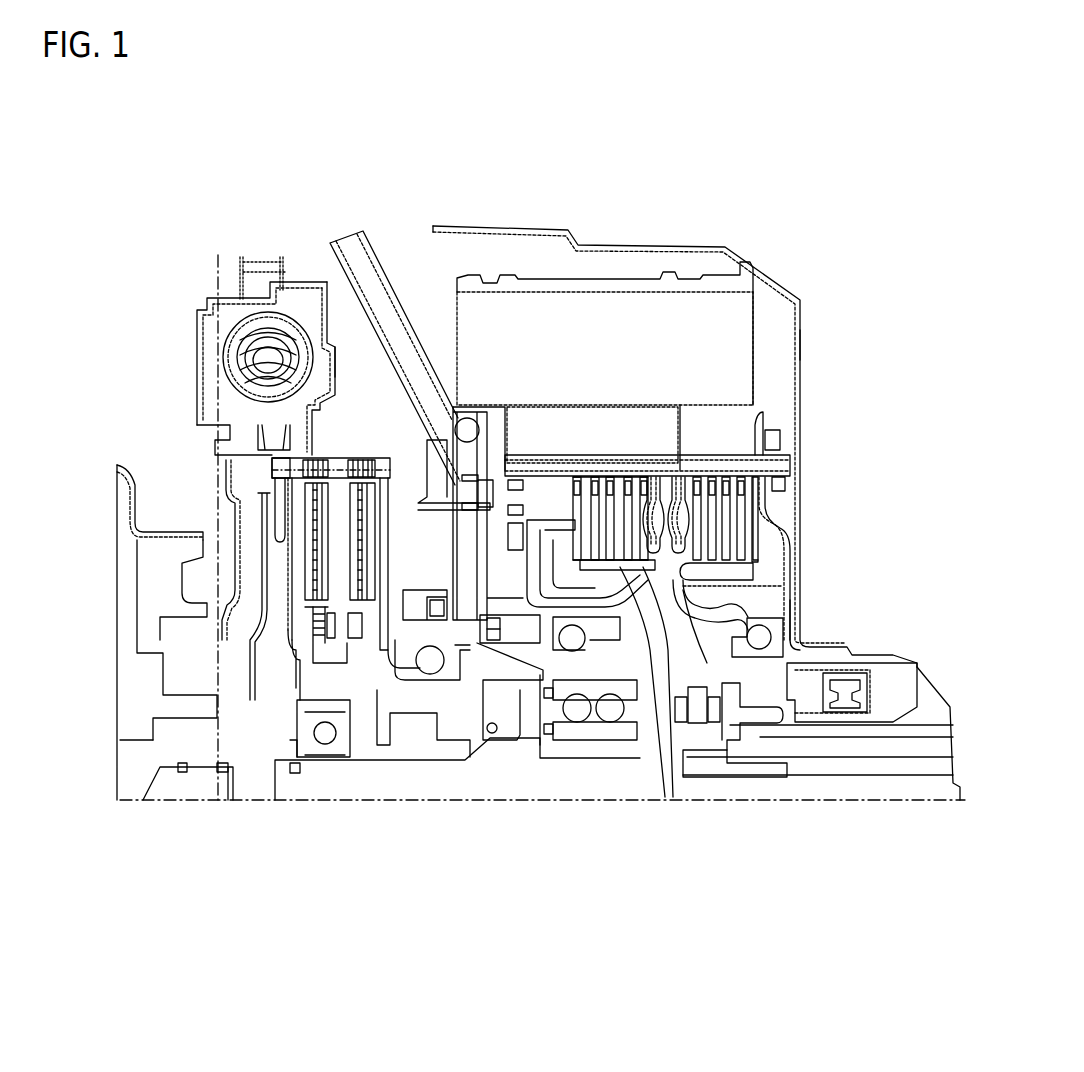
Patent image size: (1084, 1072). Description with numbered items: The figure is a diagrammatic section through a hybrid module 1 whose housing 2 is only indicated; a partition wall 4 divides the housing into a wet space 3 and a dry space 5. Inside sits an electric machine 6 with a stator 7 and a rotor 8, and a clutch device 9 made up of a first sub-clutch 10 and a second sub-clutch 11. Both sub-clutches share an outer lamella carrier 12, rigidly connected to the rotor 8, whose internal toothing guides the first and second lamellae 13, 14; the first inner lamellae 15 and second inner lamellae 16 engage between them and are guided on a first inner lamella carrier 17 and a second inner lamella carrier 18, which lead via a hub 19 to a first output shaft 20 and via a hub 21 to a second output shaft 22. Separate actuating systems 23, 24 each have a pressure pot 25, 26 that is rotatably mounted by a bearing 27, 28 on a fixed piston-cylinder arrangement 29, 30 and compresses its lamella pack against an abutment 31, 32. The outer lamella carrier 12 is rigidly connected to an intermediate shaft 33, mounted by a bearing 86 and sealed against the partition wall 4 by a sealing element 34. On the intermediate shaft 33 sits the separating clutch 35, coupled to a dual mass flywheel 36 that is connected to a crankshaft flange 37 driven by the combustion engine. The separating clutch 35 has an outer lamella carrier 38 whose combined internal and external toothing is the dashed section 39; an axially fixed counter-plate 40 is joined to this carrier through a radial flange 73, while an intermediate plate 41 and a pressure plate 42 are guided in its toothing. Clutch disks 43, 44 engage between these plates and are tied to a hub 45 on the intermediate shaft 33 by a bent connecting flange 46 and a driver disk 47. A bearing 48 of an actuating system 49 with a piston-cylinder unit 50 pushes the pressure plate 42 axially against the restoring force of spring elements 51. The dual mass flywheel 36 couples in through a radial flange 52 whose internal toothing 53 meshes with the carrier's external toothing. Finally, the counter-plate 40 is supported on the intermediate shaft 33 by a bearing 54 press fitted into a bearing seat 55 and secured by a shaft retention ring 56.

The hybrid module 1 is at (610, 186).
The housing 2 is at (806, 302).
The wet space 3 is at (778, 344).
The partition wall 4 is at (386, 275).
The dry space 5 is at (346, 326).
The electric machine 6 is at (764, 310).
The stator 7 is at (737, 306).
The rotor 8 is at (527, 415).
The clutch device 9 is at (783, 497).
The first sub-clutch 10 is at (588, 457).
The second sub-clutch 11 is at (720, 455).
The outer lamella carrier 12 is at (783, 466).
The first lamellae 13 is at (613, 480).
The second lamellae 14 is at (720, 486).
The first inner lamellae 15 is at (607, 548).
The second inner lamellae 16 is at (738, 552).
The first inner lamella carrier 17 is at (660, 688).
The second inner lamella carrier 18 is at (750, 580).
The hub 19 is at (708, 752).
The first output shaft 20 is at (804, 777).
The hub 21 is at (755, 720).
The second output shaft 22 is at (916, 733).
The actuating system 23 is at (528, 660).
The actuating system 24 is at (840, 658).
The pressure pot 25 is at (532, 565).
The pressure pot 26 is at (787, 572).
The bearing 27 is at (585, 650).
The bearing 28 is at (775, 638).
The piston-cylinder arrangement 29 is at (493, 642).
The piston-cylinder arrangement 30 is at (882, 688).
The abutment 31 is at (652, 480).
The abutment 32 is at (675, 483).
The intermediate shaft 33 is at (552, 787).
The sealing element 34 is at (490, 640).
The separating clutch 35 is at (352, 438).
The dual mass flywheel 36 is at (230, 240).
The crankshaft flange 37 is at (130, 770).
The outer lamella carrier 38 is at (320, 460).
The section 39 is at (380, 478).
The counter-plate 40 is at (293, 563).
The intermediate plate 41 is at (342, 463).
The pressure plate 42 is at (388, 577).
The clutch disk 43 is at (307, 592).
The clutch disk 44 is at (360, 548).
The hub 45 is at (382, 745).
The connecting flange 46 is at (333, 667).
The driver disk 47 is at (353, 653).
The bearing 48 is at (425, 677).
The actuating system 49 is at (427, 585).
The piston-cylinder unit 50 is at (447, 583).
The spring elements 51 is at (338, 469).
The radial flange 52 is at (268, 426).
The internal toothing 53 is at (282, 463).
The bearing 54 is at (290, 745).
The bearing seat 55 is at (313, 698).
The shaft retention ring 56 is at (296, 768).
The radial flange 73 is at (270, 495).
The bearing 86 is at (590, 731).